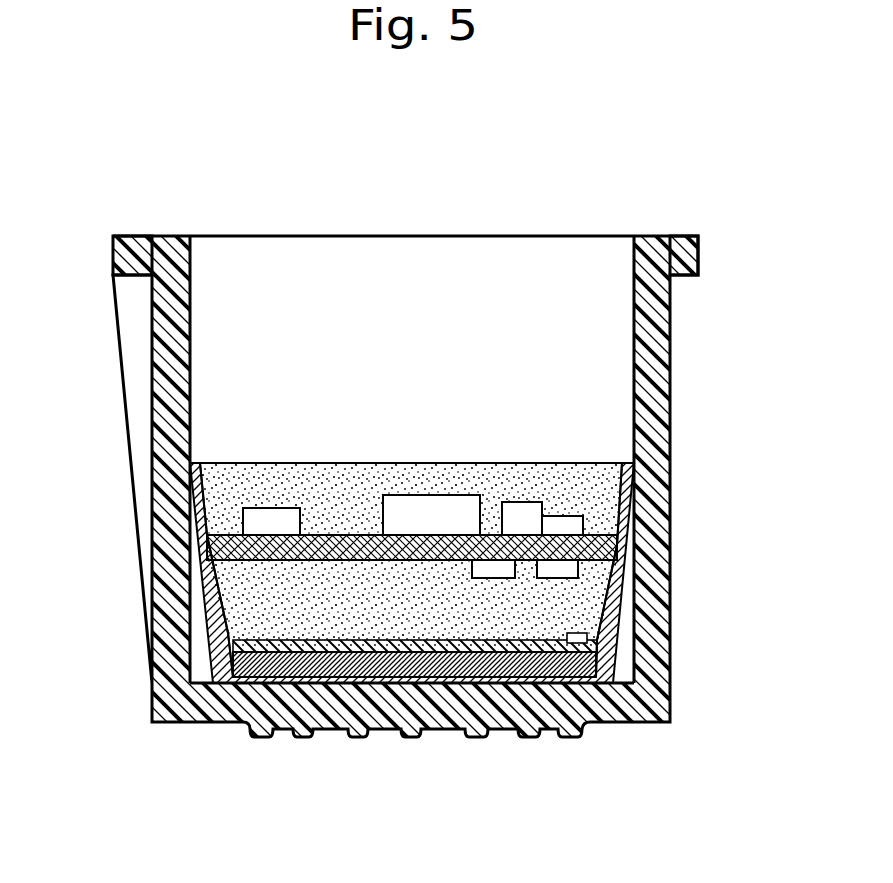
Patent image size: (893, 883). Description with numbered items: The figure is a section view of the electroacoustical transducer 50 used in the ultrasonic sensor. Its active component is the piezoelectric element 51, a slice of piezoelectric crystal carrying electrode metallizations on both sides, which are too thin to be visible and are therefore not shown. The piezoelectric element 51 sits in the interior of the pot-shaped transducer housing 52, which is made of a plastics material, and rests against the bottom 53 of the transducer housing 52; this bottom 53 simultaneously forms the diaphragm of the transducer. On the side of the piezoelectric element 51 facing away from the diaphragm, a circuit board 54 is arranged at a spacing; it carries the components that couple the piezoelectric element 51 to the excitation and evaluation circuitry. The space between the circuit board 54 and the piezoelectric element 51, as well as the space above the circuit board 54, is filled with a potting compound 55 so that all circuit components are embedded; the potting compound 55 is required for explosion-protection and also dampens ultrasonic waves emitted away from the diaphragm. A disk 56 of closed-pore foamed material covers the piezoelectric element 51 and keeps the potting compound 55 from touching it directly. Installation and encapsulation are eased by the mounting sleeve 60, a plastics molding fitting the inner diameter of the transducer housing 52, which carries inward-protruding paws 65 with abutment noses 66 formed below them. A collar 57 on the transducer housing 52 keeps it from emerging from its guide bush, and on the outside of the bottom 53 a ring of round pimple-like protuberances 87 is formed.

The electroacoustical transducer 50 is at (180, 183).
The piezoelectric element 51 is at (473, 675).
The transducer housing 52 is at (660, 367).
The bottom 53 is at (348, 705).
The circuit board 54 is at (620, 545).
The potting compound 55 is at (488, 473).
The disk 56 is at (407, 640).
The collar 57 is at (702, 242).
The mounting sleeve 60 is at (193, 540).
The paw 65 is at (210, 604).
The abutment nose 66 is at (225, 659).
The protuberances 87 is at (263, 737).